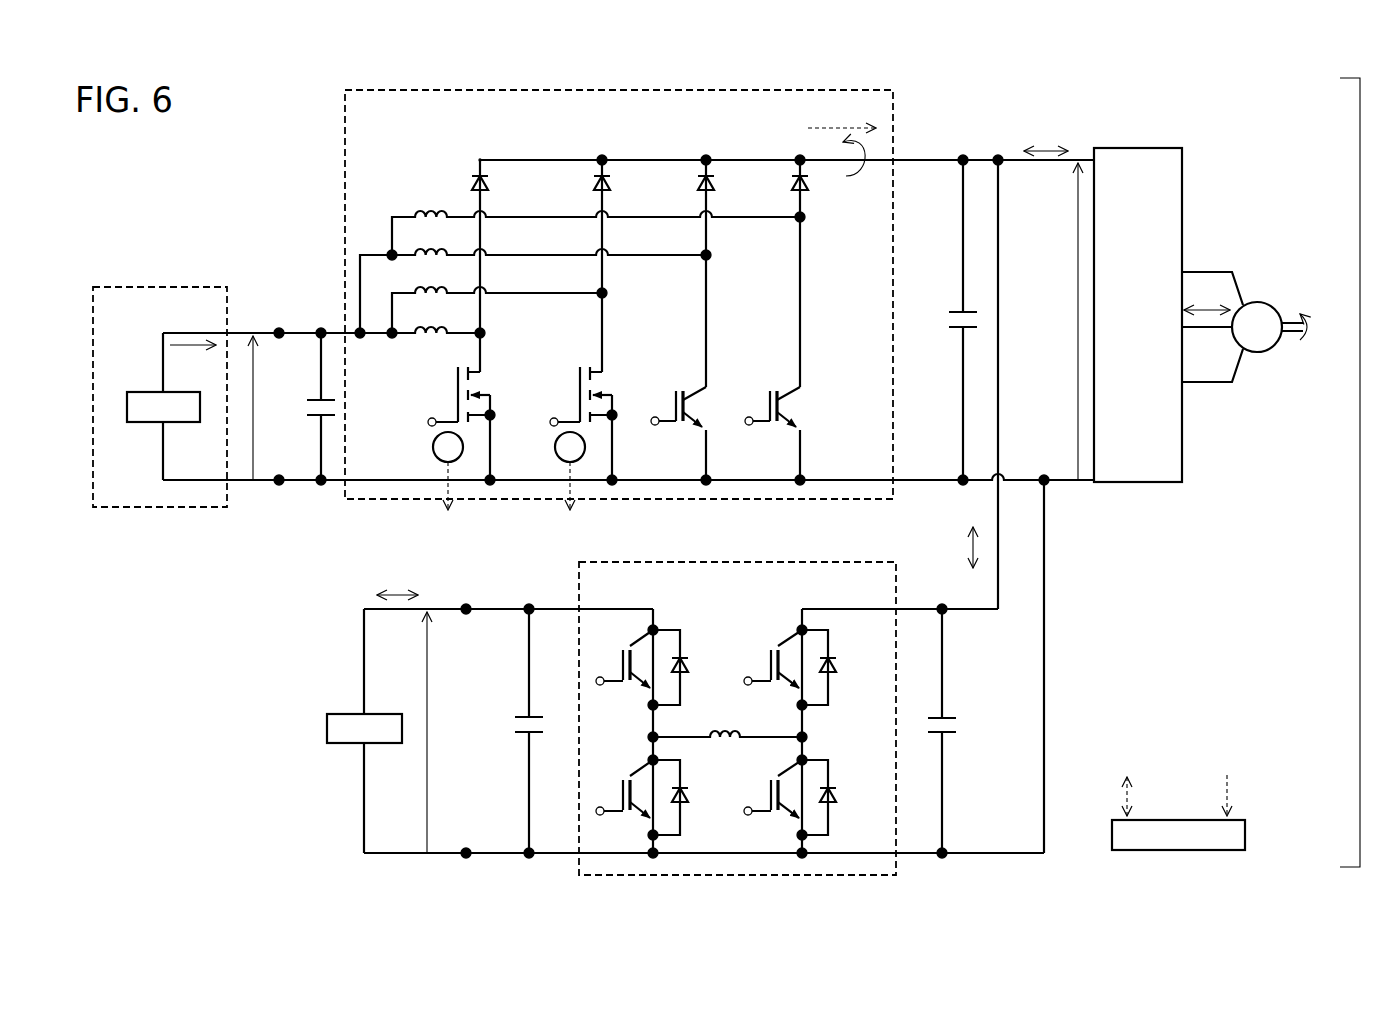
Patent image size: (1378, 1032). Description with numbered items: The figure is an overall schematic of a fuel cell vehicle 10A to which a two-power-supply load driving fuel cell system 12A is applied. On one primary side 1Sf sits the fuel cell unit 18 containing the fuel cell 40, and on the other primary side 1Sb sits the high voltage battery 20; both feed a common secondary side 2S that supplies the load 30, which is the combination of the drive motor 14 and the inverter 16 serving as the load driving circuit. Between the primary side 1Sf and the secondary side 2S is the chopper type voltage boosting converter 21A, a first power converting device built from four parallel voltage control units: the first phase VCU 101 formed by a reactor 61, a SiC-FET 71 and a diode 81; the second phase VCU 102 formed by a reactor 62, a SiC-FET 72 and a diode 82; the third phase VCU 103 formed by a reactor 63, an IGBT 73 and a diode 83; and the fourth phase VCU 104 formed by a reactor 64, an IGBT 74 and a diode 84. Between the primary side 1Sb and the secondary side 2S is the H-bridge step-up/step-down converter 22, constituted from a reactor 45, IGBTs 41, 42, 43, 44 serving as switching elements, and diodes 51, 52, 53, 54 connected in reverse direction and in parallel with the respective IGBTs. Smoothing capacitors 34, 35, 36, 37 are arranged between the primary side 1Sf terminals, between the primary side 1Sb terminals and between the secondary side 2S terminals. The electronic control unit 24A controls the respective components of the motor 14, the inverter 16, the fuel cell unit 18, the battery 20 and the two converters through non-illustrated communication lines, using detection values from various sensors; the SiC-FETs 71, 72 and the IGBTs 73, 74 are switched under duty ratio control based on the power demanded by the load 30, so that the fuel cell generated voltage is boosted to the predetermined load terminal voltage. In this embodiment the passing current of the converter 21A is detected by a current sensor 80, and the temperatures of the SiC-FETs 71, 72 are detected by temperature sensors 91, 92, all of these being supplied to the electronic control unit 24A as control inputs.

The fuel cell vehicle 10A is at (160, 193).
The fuel cell system 12A is at (927, 103).
The drive motor 14 is at (1258, 302).
The load driving circuit 16 is at (1183, 182).
The fuel cell unit 18 is at (160, 378).
The high voltage battery 20 is at (345, 713).
The chopper type voltage boosting converter 21A is at (343, 152).
The chopper type step-up/step-down converter 22 is at (660, 561).
The electronic control unit 24A is at (1247, 836).
The load 30 is at (1200, 286).
The smoothing capacitor 34 is at (307, 412).
The smoothing capacitor 35 is at (948, 320).
The smoothing capacitor 36 is at (515, 724).
The smoothing capacitor 37 is at (958, 727).
The fuel cell 40 is at (150, 391).
The IGBT 41 is at (621, 668).
The IGBT 42 is at (769, 798).
The IGBT 43 is at (769, 668).
The IGBT 44 is at (621, 798).
The reactor 45 is at (727, 730).
The diode 51 is at (689, 666).
The diode 52 is at (837, 796).
The diode 53 is at (837, 666).
The diode 54 is at (689, 796).
The reactor 61 is at (422, 341).
The reactor 62 is at (422, 286).
The reactor 63 is at (436, 251).
The reactor 64 is at (420, 210).
The SiC-FET 71 is at (457, 388).
The SiC-FET 72 is at (579, 388).
The IGBT 73 is at (675, 405).
The IGBT 74 is at (769, 405).
The current sensor 80 is at (846, 178).
The diode 81 is at (471, 183).
The diode 82 is at (593, 183).
The diode 83 is at (697, 183).
The diode 84 is at (791, 183).
The temperature sensor 91 is at (432, 447).
The temperature sensor 92 is at (554, 447).
The first phase VCU 101 is at (481, 156).
The second phase VCU 102 is at (600, 156).
The third phase VCU 103 is at (705, 156).
The fourth phase VCU 104 is at (799, 156).
The primary side 1Sf is at (280, 328).
The primary side 1Sb is at (466, 604).
The secondary side 2S is at (996, 156).